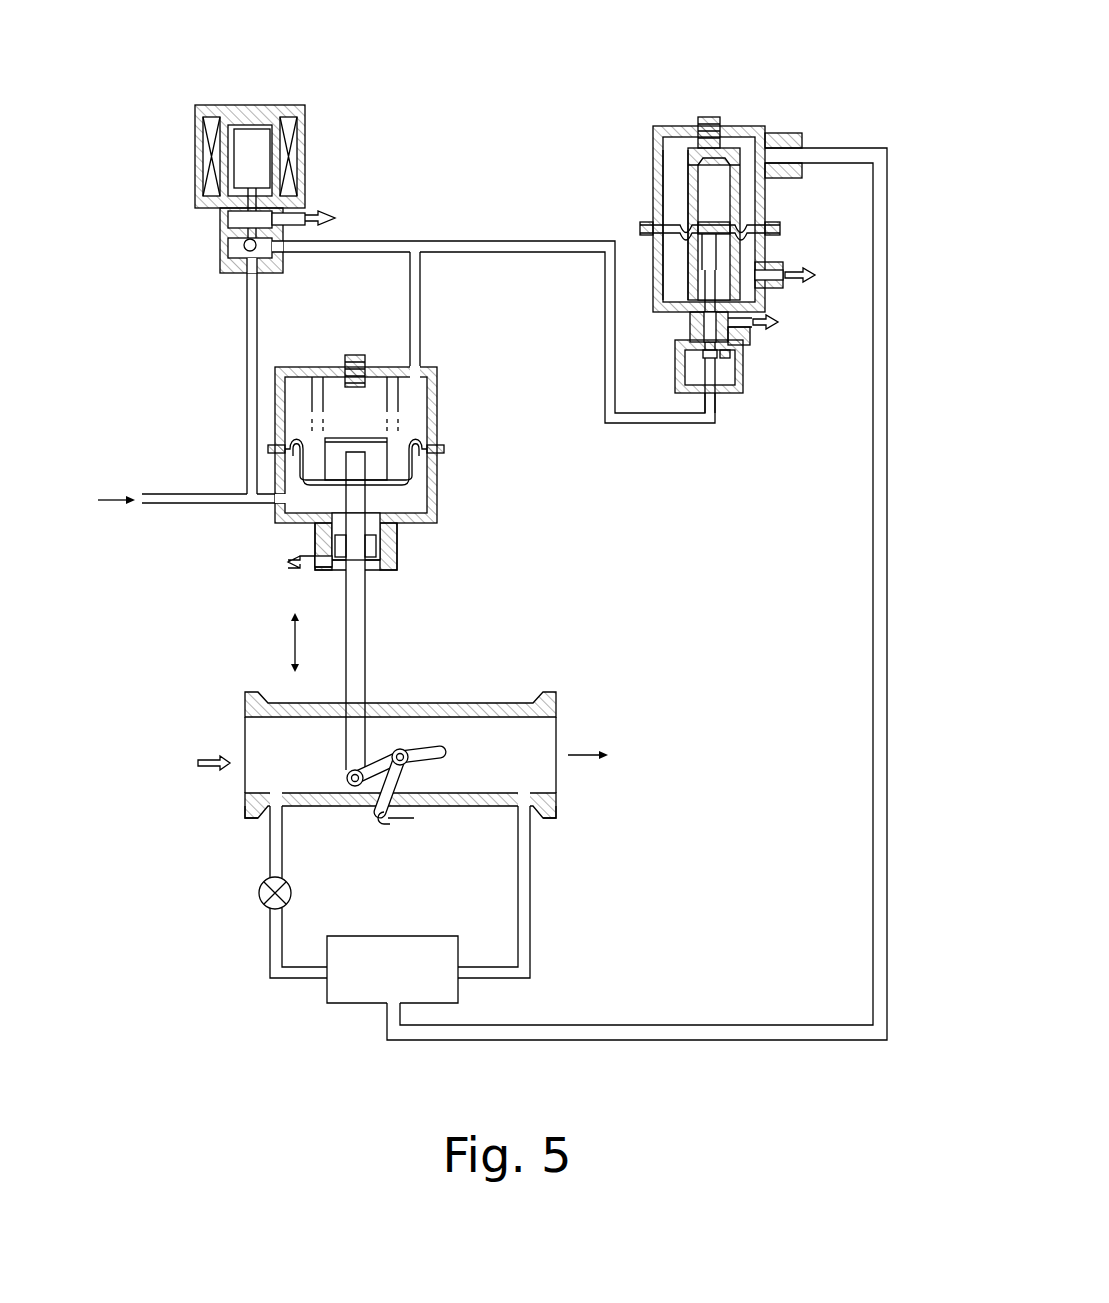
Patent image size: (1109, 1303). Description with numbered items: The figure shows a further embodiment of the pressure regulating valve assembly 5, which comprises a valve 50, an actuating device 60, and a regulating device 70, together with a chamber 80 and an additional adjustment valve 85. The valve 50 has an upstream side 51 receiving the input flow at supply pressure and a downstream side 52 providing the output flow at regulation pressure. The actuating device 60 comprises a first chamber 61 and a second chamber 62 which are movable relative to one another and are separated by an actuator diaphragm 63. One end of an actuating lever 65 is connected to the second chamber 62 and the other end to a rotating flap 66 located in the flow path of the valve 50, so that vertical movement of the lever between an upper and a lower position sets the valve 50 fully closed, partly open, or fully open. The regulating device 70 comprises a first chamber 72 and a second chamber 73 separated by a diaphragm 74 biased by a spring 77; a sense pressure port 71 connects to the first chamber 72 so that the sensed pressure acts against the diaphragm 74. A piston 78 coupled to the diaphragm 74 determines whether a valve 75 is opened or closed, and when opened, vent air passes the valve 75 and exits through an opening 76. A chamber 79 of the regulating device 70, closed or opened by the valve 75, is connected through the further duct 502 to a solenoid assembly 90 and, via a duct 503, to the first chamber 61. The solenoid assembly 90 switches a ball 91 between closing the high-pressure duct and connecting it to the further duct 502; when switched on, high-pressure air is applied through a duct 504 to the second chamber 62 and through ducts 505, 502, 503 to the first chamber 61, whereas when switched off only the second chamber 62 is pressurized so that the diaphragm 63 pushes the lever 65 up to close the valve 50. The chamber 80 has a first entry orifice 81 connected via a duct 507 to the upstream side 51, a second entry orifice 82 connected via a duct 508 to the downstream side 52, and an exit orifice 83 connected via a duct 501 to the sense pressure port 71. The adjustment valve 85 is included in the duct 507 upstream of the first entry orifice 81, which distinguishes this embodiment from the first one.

The pressure regulating valve assembly 5 is at (203, 675).
The valve 50 is at (448, 703).
The upstream side 51 is at (248, 800).
The downstream side 52 is at (553, 795).
The actuating device 60 is at (438, 410).
The first chamber 61 is at (412, 393).
The second chamber 62 is at (412, 493).
The actuator diaphragm 63 is at (300, 440).
The actuating lever 65 is at (366, 630).
The rotating flap 66 is at (438, 756).
The regulating device 70 is at (647, 146).
The sense pressure port 71 is at (775, 162).
The first chamber 72 is at (679, 146).
The second chamber 73 is at (681, 300).
The diaphragm 74 is at (748, 234).
The valve 75 is at (725, 358).
The opening 76 is at (758, 333).
The spring 77 is at (737, 258).
The piston 78 is at (708, 264).
The chamber 79 is at (722, 416).
The chamber 80 is at (365, 995).
The first entry orifice 81 is at (337, 965).
The second entry orifice 82 is at (452, 968).
The exit orifice 83 is at (388, 1002).
The adjustment valve 85 is at (259, 898).
The solenoid assembly 90 is at (260, 105).
The ball 91 is at (246, 250).
The duct 501 is at (887, 580).
The further duct 502 is at (524, 240).
The duct 503 is at (422, 305).
The duct 504 is at (178, 503).
The duct 505 is at (247, 325).
The duct 507 is at (268, 880).
The duct 508 is at (531, 905).